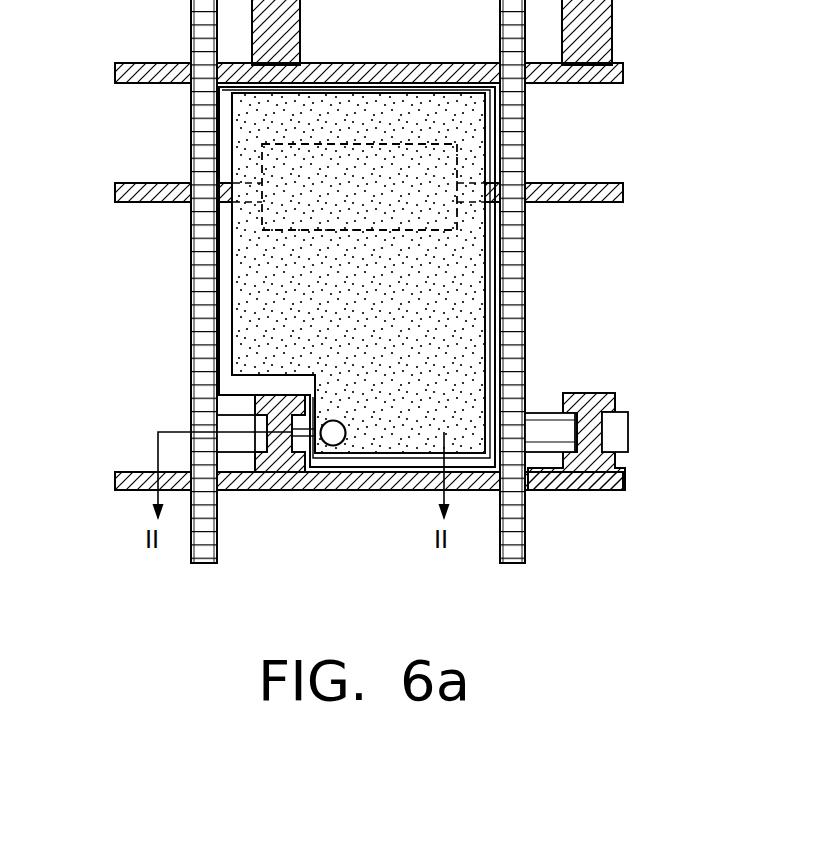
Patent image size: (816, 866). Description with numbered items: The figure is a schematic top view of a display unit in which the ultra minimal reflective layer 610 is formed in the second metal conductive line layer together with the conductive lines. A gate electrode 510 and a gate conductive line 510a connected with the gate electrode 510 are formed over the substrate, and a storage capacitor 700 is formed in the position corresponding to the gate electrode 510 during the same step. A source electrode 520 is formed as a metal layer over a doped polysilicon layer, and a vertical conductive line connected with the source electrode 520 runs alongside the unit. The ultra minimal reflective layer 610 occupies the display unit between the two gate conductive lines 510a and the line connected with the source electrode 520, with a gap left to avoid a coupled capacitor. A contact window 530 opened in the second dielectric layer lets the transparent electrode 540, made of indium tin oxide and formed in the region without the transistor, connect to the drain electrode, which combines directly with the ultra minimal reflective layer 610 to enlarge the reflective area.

The gate electrode 510 is at (284, 460).
The gate conductive line 510a is at (228, 491).
The source electrode 520 is at (229, 427).
The contact window 530 is at (322, 452).
The transparent electrode 540 is at (403, 468).
The ultra minimal reflective layer 610 is at (245, 306).
The storage capacitor 700 is at (304, 208).